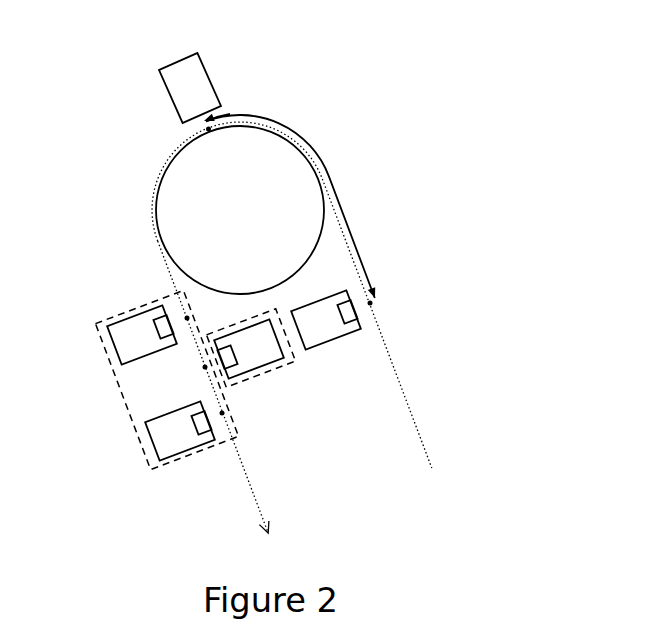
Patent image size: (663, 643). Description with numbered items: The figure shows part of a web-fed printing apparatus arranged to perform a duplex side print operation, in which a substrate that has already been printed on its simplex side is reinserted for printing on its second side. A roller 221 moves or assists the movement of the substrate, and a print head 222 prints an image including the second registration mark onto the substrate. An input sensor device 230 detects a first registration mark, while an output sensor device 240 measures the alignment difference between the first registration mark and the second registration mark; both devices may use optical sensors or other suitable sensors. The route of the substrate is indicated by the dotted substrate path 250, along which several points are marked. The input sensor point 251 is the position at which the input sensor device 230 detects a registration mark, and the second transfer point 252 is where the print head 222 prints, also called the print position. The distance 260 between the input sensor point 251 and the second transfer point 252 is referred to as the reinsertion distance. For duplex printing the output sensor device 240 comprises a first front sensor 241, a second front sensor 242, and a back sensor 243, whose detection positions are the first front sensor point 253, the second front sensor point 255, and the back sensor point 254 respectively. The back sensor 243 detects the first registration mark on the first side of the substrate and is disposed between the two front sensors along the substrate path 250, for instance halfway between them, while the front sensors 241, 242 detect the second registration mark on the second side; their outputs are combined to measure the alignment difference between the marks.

The roller 221 is at (323, 196).
The print head 222 is at (168, 93).
The input sensor device 230 is at (333, 345).
The output sensor device 240 is at (202, 452).
The first front sensor 241 is at (113, 345).
The second front sensor 242 is at (147, 447).
The back sensor 243 is at (258, 370).
The substrate path 250 is at (408, 393).
The input sensor point 251 is at (373, 305).
The second transfer point 252 is at (208, 122).
The first front sensor point 253 is at (185, 316).
The back sensor point 254 is at (203, 368).
The second front sensor point 255 is at (224, 414).
The distance 260 is at (327, 163).